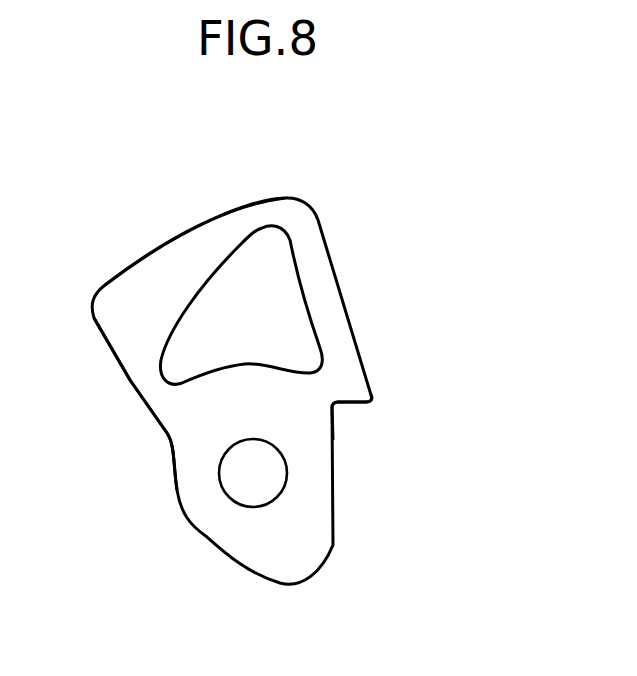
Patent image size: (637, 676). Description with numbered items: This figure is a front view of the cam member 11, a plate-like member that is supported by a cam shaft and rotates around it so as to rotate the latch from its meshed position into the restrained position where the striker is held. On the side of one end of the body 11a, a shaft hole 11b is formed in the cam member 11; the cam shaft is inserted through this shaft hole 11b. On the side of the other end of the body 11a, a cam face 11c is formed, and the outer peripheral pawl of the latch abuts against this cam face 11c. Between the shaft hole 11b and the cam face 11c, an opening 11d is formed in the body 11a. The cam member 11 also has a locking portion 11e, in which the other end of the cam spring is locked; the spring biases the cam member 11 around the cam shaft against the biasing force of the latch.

The cam member 11 is at (280, 190).
The body 11a is at (183, 428).
The shaft hole 11b is at (262, 503).
The cam face 11c is at (158, 239).
The opening 11d is at (296, 290).
The locking portion 11e is at (338, 402).